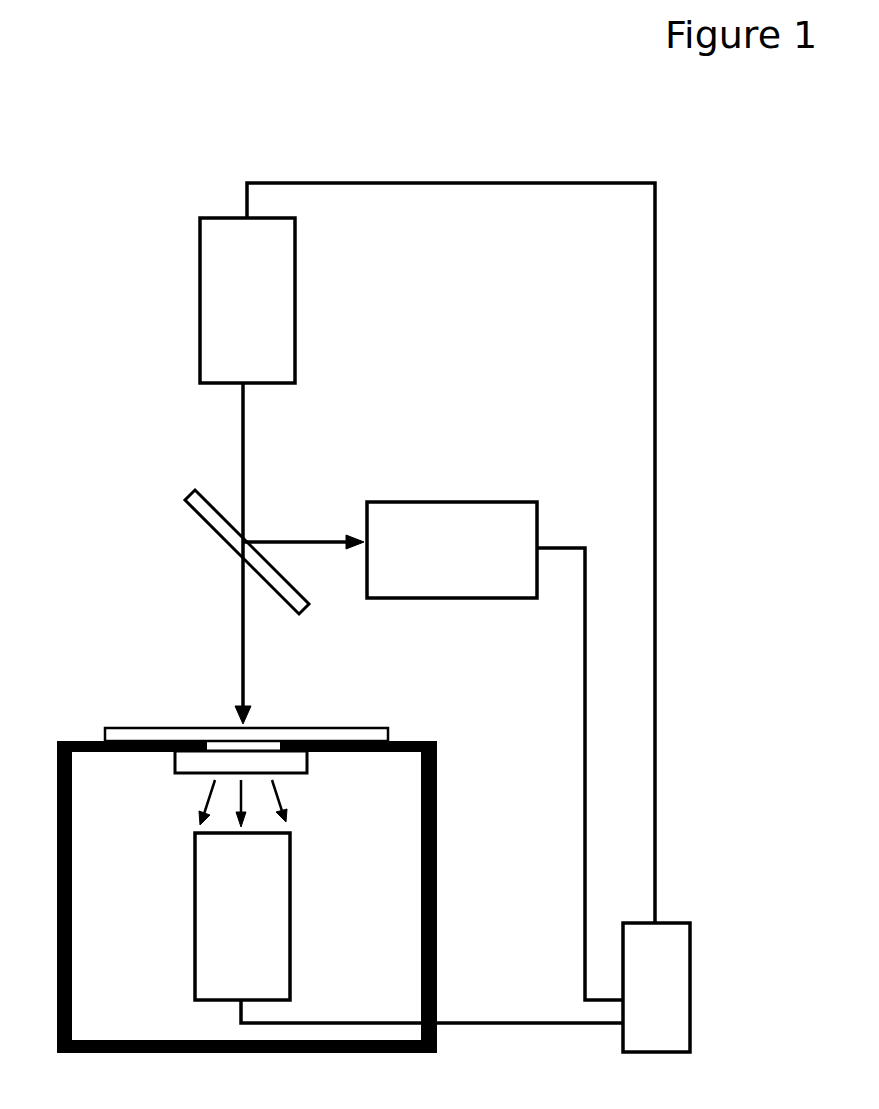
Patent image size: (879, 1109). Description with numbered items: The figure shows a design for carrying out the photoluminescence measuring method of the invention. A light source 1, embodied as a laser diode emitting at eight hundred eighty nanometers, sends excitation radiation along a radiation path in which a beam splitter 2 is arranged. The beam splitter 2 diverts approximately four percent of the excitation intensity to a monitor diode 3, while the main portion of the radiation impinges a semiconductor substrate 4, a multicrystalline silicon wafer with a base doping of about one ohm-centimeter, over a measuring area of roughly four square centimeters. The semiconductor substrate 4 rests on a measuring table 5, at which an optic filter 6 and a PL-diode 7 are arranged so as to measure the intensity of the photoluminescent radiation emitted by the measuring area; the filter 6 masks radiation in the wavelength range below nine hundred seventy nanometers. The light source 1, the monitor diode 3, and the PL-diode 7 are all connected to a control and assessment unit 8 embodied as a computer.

The light source 1 is at (210, 311).
The beam splitter 2 is at (230, 544).
The monitor diode 3 is at (412, 550).
The semiconductor substrate 4 is at (168, 718).
The measuring table 5 is at (397, 733).
The optic filter 6 is at (295, 775).
The PL-diode 7 is at (207, 920).
The control and assessment unit 8 is at (627, 995).